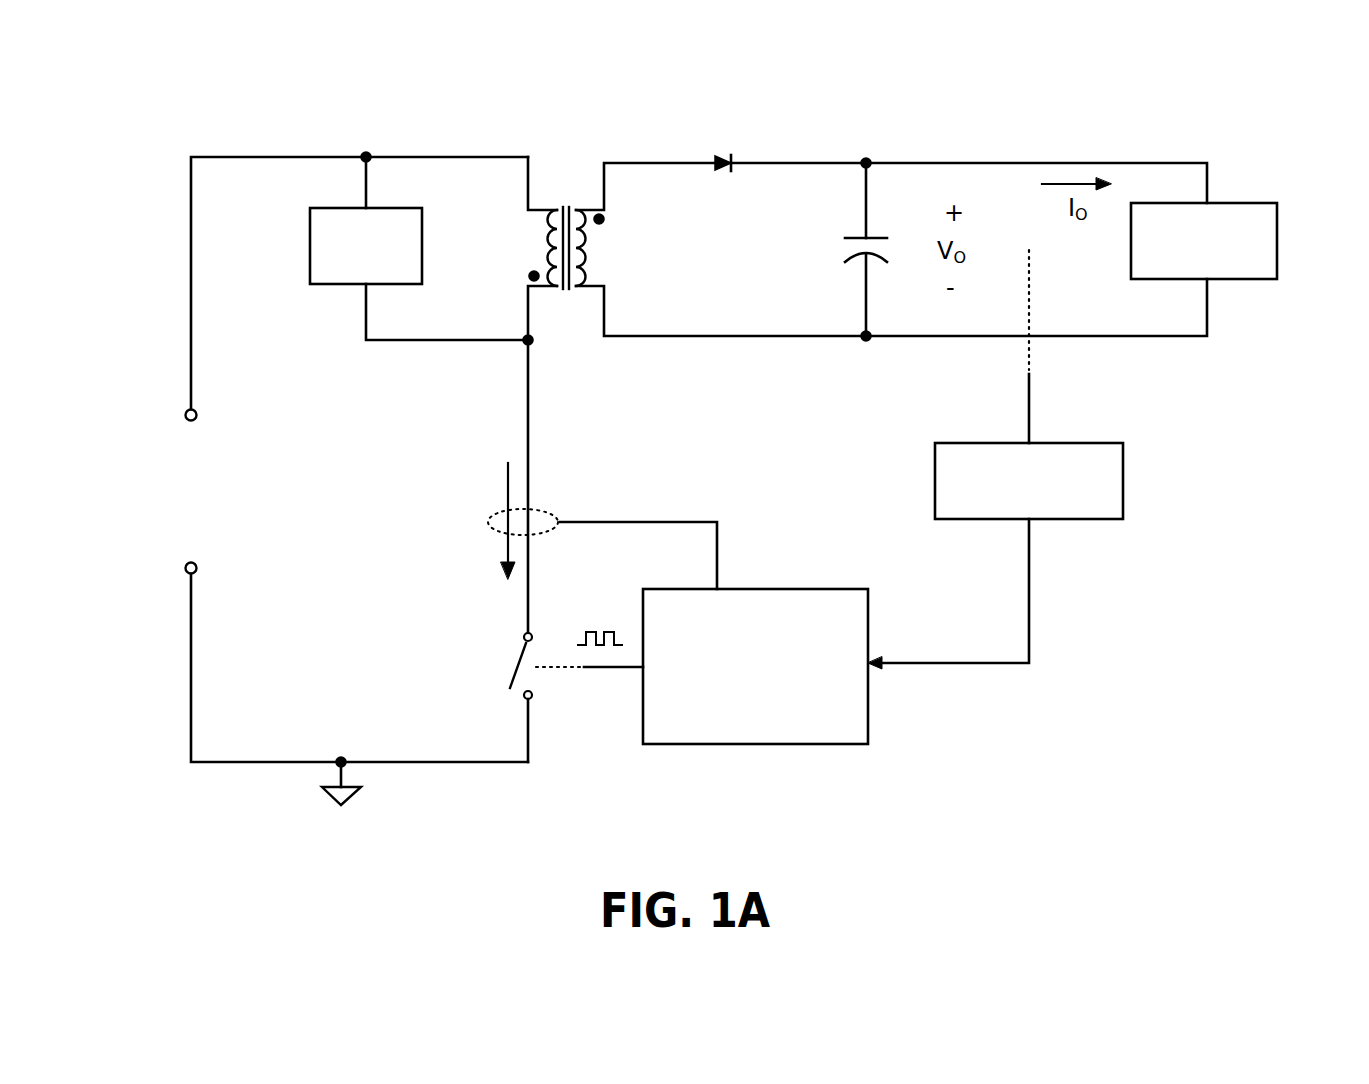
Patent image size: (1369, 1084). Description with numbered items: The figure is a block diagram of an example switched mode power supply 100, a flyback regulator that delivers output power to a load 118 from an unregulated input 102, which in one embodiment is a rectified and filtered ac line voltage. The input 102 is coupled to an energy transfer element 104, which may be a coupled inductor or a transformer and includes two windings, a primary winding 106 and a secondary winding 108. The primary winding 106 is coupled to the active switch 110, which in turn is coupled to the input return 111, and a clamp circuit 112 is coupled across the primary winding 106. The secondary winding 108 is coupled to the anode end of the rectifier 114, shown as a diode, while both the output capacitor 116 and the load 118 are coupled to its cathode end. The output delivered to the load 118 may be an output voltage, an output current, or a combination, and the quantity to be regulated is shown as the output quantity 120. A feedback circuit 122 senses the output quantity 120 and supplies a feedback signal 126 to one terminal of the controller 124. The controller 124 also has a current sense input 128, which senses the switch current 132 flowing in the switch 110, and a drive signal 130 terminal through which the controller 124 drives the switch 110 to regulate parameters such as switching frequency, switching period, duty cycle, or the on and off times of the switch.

The switched mode power supply 100 is at (138, 105).
The input VIN 102 is at (160, 516).
The energy transfer element T1 104 is at (662, 276).
The primary winding 106 is at (518, 253).
The secondary winding 108 is at (612, 255).
The switch S1 110 is at (510, 646).
The input return 111 is at (350, 810).
The clamp circuit 112 is at (298, 256).
The rectifier D1 114 is at (724, 133).
The output capacitor C1 116 is at (854, 228).
The load 118 is at (1278, 239).
The output quantity UO 120 is at (1018, 409).
The feedback circuit 122 is at (1133, 483).
The controller 124 is at (848, 584).
The feedback signal UFB 126 is at (1036, 612).
The current sense input 128 is at (713, 509).
The drive signal 130 is at (603, 604).
The switch current ID 132 is at (490, 462).